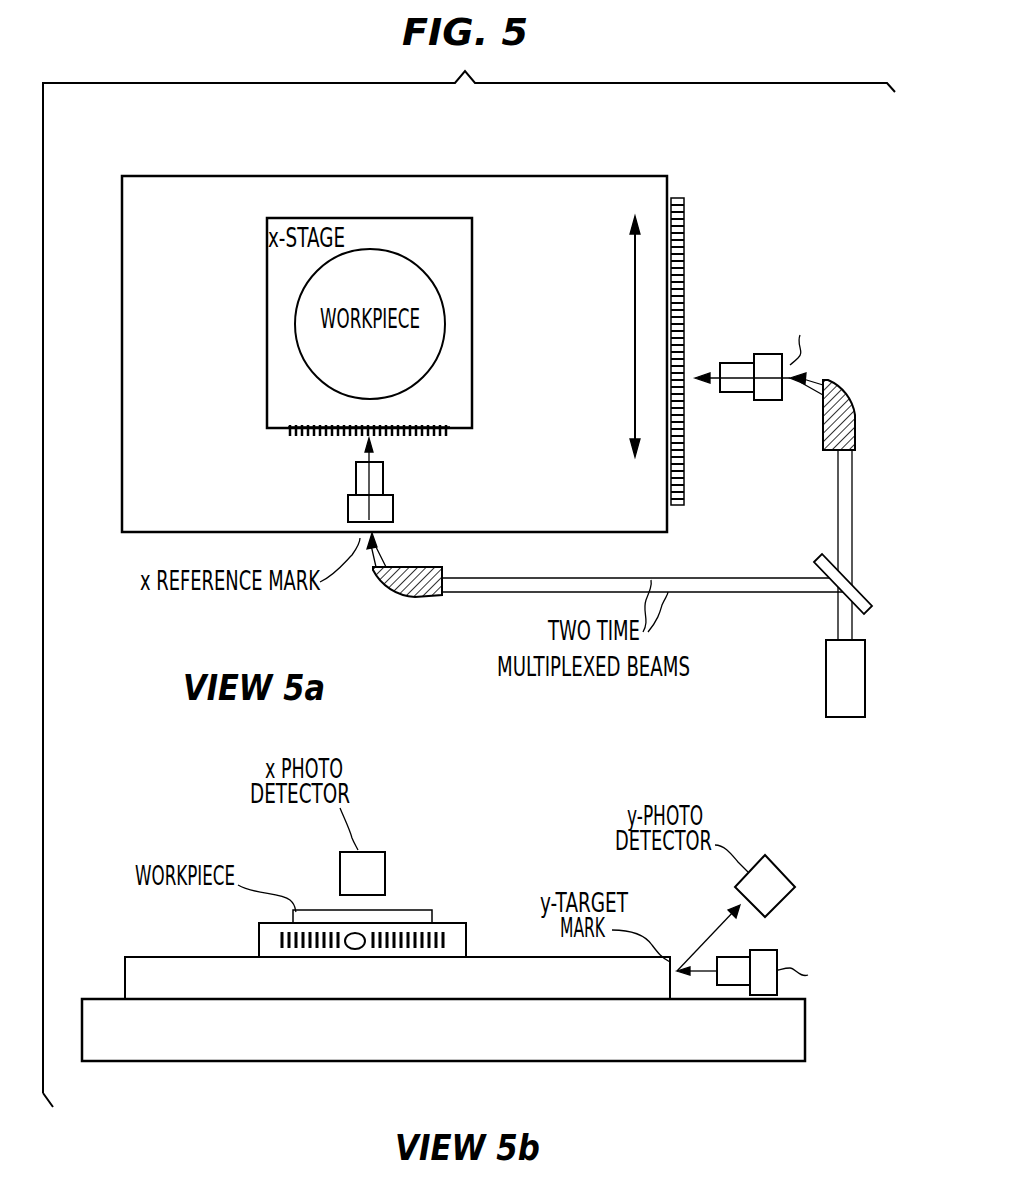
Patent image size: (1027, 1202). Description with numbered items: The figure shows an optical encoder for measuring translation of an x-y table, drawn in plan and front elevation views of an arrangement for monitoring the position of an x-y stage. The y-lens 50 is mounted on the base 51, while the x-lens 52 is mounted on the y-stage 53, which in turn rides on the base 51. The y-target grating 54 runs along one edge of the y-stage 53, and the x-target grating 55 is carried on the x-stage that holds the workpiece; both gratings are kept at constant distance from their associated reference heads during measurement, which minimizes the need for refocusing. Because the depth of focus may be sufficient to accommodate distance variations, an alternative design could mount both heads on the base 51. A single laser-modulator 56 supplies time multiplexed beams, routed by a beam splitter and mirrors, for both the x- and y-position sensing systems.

The y-lens 50 is at (728, 395).
The base 51 is at (913, 495).
The x-lens 52 is at (356, 478).
The y-stage 53 is at (372, 176).
The y-target grating 54 is at (684, 243).
The x-target grating 55 is at (290, 437).
The laser-modulator 56 is at (826, 676).